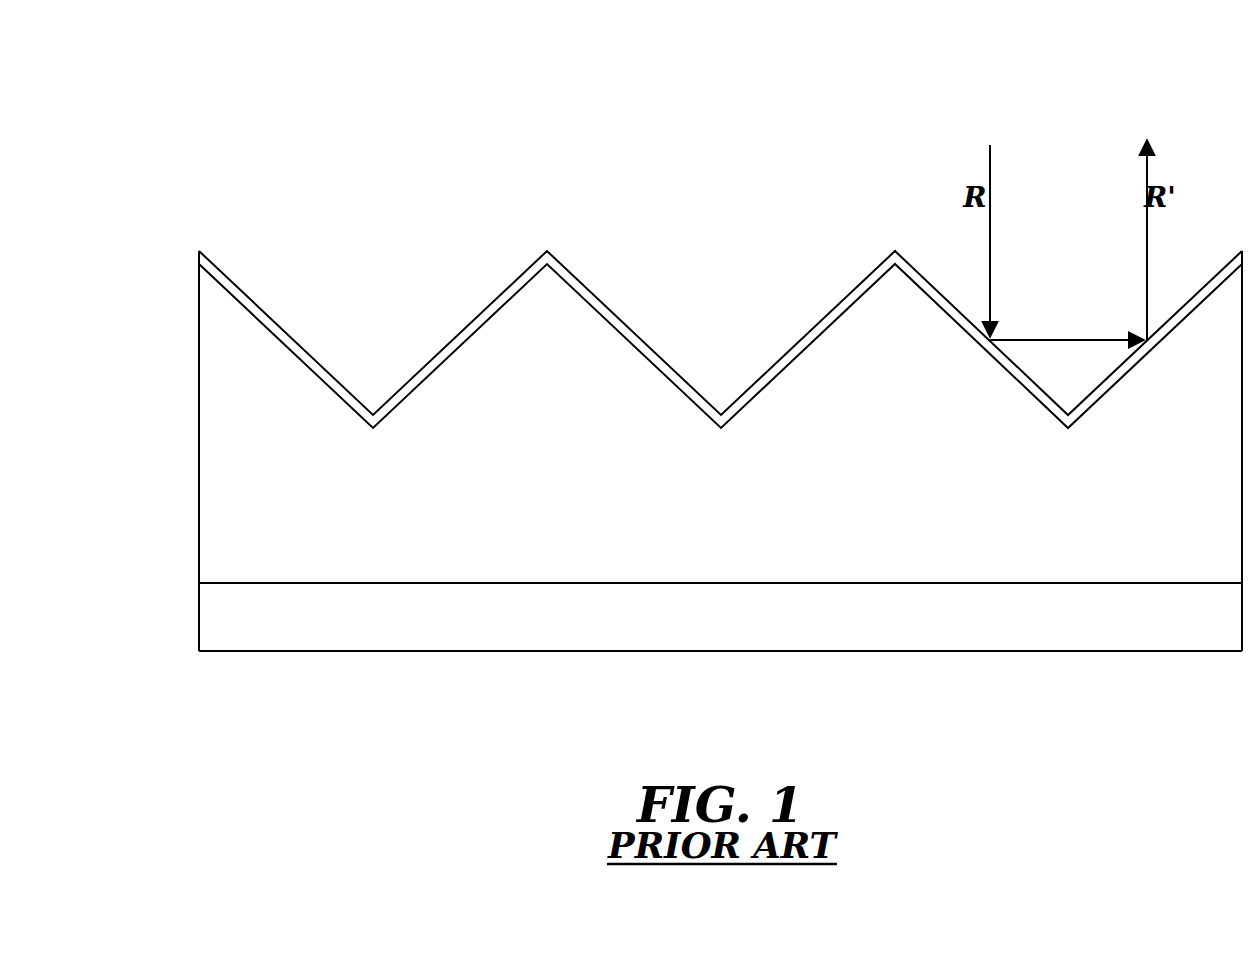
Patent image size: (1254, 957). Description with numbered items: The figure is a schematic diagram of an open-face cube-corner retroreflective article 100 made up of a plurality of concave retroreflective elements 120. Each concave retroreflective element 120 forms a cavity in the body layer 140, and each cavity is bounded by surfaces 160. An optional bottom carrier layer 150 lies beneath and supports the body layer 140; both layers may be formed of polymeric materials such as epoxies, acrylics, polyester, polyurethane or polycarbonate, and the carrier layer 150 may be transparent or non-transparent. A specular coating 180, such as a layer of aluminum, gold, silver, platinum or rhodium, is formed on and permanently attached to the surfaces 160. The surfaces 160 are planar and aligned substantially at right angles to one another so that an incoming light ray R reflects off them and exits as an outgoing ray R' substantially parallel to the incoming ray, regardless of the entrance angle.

The retroreflective article 100 is at (210, 104).
The concave retroreflective element 120 is at (268, 239).
The body layer 140 is at (208, 456).
The bottom carrier layer 150 is at (208, 619).
The surfaces 160 is at (300, 362).
The specular coating 180 is at (292, 338).